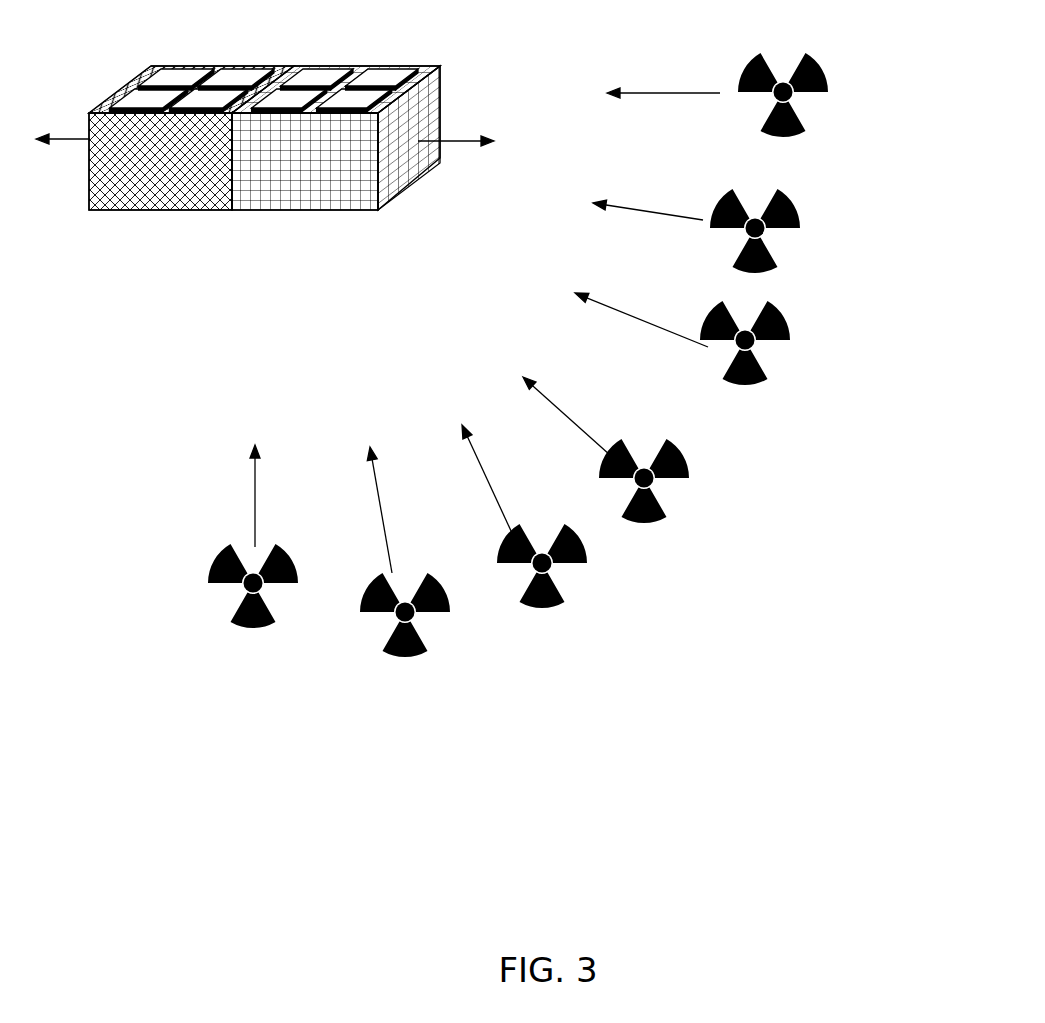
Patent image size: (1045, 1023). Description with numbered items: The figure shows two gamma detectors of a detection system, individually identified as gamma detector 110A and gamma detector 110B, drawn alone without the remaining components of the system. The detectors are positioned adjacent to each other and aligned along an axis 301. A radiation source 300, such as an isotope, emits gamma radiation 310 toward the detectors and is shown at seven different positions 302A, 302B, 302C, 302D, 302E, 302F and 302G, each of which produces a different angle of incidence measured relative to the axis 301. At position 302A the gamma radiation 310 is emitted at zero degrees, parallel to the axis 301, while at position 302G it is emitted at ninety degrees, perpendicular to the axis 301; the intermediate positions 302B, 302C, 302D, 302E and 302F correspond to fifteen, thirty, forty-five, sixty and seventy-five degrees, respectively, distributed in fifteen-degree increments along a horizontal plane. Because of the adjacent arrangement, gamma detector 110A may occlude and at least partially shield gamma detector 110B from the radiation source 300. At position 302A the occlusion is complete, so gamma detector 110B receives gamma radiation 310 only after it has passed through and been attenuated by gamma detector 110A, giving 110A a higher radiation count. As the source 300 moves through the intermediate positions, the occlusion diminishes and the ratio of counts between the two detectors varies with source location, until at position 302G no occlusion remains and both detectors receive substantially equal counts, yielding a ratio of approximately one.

The gamma detector 110A is at (325, 176).
The gamma detector 110B is at (136, 171).
The axis 301 is at (452, 140).
The radiation source 300 is at (808, 52).
The gamma radiation 310 is at (687, 93).
The position 302A is at (844, 77).
The position 302B is at (806, 216).
The position 302C is at (793, 319).
The position 302D is at (698, 470).
The position 302E is at (574, 594).
The position 302F is at (438, 632).
The position 302G is at (283, 612).